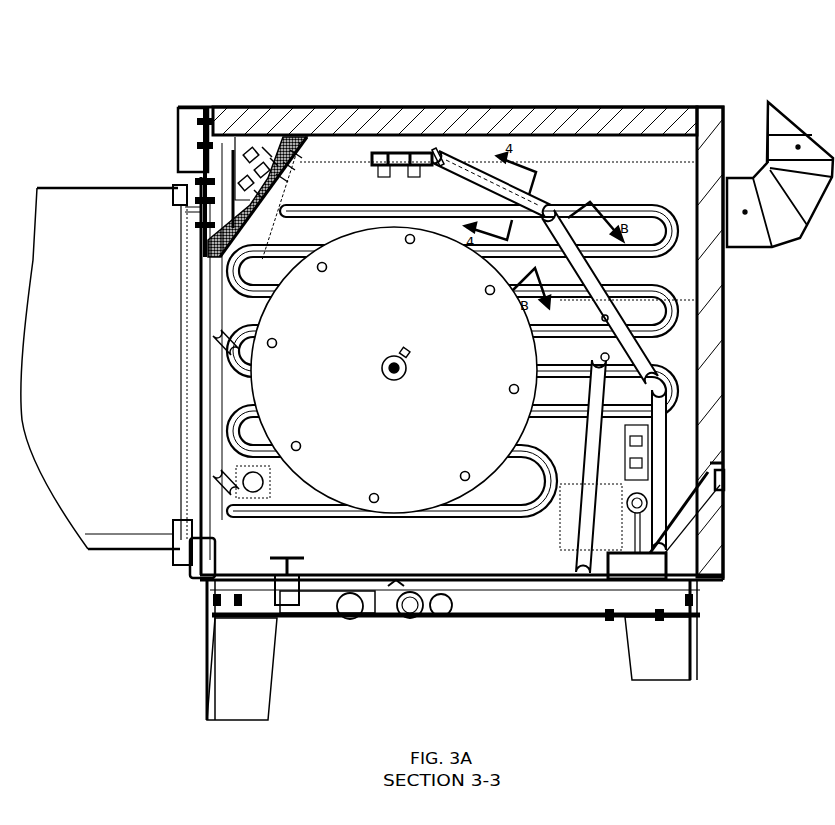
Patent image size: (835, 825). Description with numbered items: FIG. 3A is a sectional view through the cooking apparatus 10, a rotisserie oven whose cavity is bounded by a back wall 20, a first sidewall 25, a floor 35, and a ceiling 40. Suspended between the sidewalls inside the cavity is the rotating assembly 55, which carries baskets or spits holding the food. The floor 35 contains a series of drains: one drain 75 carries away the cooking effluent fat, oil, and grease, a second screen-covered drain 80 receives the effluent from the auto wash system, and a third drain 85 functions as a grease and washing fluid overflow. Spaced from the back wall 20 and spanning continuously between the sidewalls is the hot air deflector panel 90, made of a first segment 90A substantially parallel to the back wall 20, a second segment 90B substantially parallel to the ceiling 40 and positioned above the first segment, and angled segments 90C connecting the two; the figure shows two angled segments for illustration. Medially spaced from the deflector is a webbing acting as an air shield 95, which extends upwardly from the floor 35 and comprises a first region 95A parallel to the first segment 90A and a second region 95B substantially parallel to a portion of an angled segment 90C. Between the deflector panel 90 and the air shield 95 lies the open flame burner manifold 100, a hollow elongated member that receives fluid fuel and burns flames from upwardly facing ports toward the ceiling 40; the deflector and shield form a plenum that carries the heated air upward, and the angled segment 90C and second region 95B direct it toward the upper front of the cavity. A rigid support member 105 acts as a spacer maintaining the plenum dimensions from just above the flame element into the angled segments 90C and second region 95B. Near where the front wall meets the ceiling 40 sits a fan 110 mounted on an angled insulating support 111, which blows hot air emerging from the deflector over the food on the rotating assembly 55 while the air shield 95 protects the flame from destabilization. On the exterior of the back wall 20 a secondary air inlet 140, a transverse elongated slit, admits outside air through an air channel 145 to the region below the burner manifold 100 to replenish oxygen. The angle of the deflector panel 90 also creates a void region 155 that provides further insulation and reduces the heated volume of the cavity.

The cooking apparatus 10 is at (407, 295).
The back wall 20 is at (755, 342).
The first sidewall 25 is at (270, 293).
The floor 35 is at (461, 525).
The ceiling 40 is at (456, 72).
The rotating assembly 55 is at (394, 261).
The drain 75 is at (322, 628).
The drain 80 is at (399, 639).
The drain 85 is at (443, 646).
The hot air deflector panel 90 is at (498, 113).
The first segment 90A is at (719, 483).
The second segment 90B is at (402, 93).
The angled segment 90C is at (600, 196).
The air shield 95 is at (712, 440).
The first region 95A is at (582, 526).
The second region 95B is at (686, 303).
The open flame burner manifold 100 is at (710, 549).
The support member 105 is at (723, 190).
The fan 110 is at (302, 134).
The insulating support 111 is at (257, 133).
The secondary air inlet 140 is at (761, 473).
The air channel 145 is at (731, 512).
The void region 155 is at (359, 279).